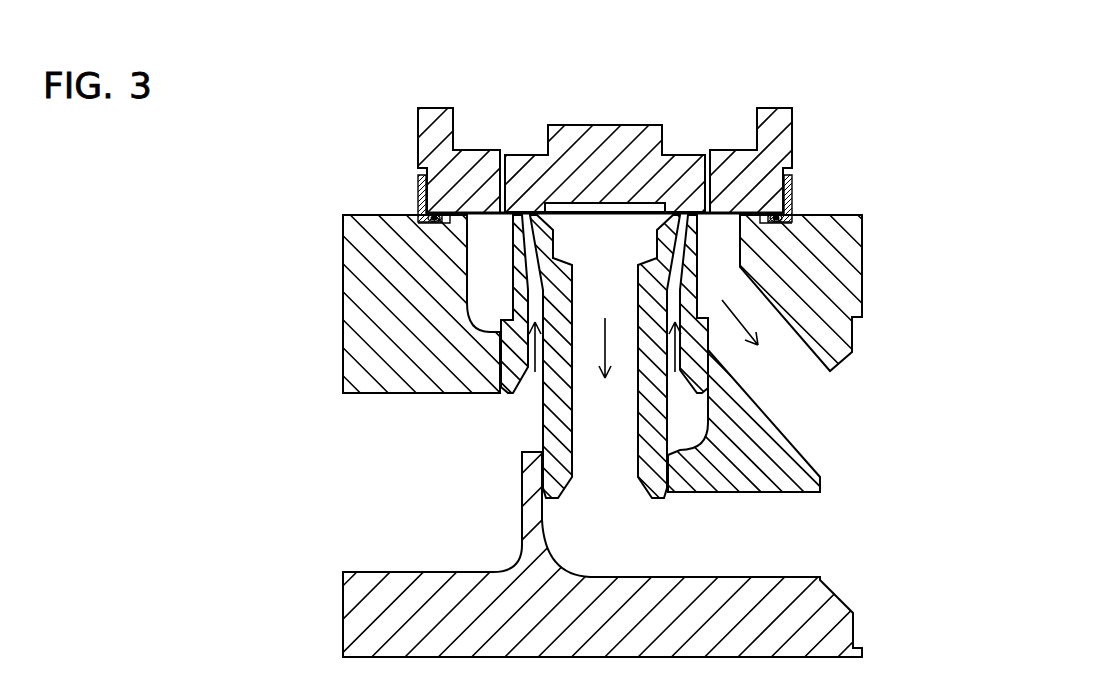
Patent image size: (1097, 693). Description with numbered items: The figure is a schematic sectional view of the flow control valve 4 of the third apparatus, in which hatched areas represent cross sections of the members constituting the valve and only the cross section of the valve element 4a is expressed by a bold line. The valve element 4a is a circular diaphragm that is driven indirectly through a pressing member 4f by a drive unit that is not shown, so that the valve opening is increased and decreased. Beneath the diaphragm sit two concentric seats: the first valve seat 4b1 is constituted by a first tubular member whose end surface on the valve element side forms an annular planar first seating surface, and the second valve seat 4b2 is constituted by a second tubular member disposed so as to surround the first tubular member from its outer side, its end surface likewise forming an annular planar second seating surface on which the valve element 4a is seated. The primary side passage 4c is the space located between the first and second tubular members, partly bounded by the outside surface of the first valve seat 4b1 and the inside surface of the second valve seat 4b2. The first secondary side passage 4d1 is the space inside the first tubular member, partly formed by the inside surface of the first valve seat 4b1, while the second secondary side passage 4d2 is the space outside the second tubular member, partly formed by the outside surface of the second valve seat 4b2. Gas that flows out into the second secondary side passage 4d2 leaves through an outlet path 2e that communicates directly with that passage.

The flow control valve 4 is at (905, 208).
The valve element 4a is at (613, 210).
The pressing member 4f is at (583, 175).
The second secondary side passage 4d2 is at (497, 246).
The second valve seat 4b2 is at (545, 280).
The first valve seat 4b1 is at (541, 286).
The first secondary side passage 4d1 is at (615, 418).
The primary side passage 4c is at (531, 422).
The outlet path 2e is at (787, 372).